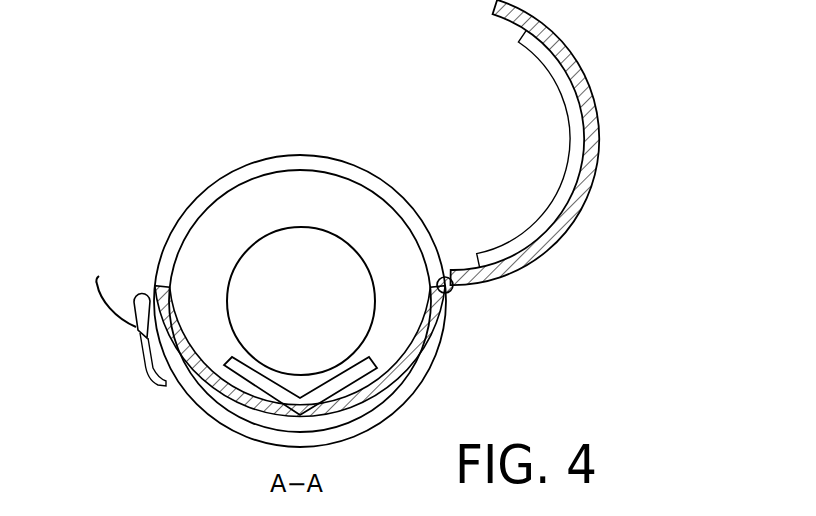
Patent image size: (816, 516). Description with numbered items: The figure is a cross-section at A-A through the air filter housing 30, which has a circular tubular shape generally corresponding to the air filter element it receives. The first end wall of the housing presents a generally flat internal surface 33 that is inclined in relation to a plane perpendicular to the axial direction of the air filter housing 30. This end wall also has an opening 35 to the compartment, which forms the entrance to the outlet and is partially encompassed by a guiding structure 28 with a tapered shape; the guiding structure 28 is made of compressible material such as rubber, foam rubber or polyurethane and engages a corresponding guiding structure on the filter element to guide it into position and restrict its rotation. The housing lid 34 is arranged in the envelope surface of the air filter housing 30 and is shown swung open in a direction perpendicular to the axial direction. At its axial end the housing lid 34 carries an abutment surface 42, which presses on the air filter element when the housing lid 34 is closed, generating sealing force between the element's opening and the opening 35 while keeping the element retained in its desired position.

The air filter housing 30 is at (127, 120).
The guiding structure 28 is at (245, 386).
The internal surface 33 is at (345, 213).
The opening 35 is at (300, 307).
The housing lid 34 is at (595, 158).
The abutment surface 42 is at (578, 120).